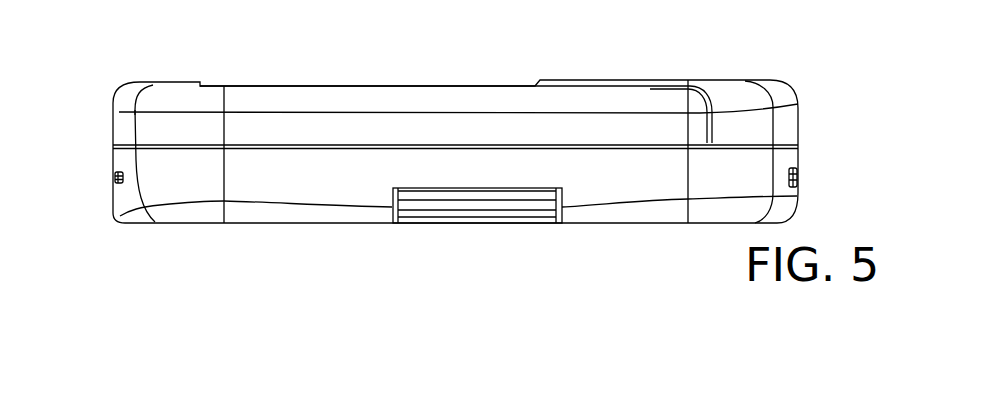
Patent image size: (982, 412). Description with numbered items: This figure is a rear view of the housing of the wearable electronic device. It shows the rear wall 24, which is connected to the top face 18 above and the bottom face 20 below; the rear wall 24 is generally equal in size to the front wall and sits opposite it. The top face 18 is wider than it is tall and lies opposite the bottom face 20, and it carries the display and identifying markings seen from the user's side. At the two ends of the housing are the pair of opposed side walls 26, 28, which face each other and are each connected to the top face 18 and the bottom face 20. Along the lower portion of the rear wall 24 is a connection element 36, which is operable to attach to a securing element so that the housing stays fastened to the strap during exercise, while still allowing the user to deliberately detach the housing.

The top face 18 is at (723, 81).
The bottom face 20 is at (196, 222).
The rear wall 24 is at (170, 132).
The side wall 26 is at (799, 154).
The side wall 28 is at (112, 158).
The connection element 36 is at (482, 213).